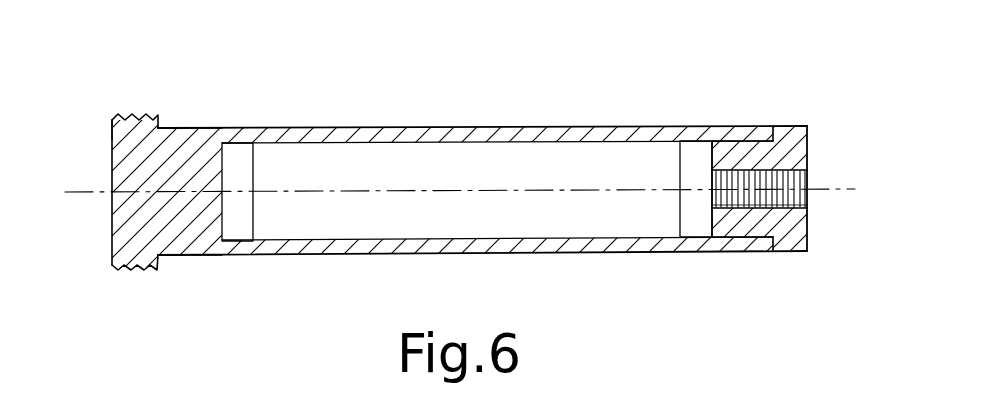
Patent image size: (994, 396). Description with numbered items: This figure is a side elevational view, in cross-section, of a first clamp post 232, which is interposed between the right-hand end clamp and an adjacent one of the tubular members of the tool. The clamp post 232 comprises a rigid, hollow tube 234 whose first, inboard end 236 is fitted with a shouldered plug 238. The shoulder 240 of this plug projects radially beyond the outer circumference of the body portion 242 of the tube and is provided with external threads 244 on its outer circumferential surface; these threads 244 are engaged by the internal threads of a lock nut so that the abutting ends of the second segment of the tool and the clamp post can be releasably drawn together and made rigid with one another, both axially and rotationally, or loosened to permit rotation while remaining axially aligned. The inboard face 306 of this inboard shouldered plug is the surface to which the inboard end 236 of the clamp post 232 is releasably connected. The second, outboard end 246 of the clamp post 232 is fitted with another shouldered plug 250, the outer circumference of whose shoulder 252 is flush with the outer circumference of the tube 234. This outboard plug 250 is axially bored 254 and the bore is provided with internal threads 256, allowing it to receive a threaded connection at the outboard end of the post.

The first clamp post 232 is at (390, 105).
The tube 234 is at (492, 127).
The first (inboard) end 236 is at (184, 130).
The shouldered plug 238 is at (118, 182).
The shoulder 240 is at (121, 136).
The body portion 242 is at (343, 247).
The external threads 244 is at (140, 113).
The second (outboard) end 246 is at (743, 130).
The shouldered plug 250 is at (790, 153).
The shoulder 252 is at (787, 137).
The axial bore 254 is at (798, 197).
The internal threads 256 is at (755, 200).
The inboard face 306 is at (112, 228).